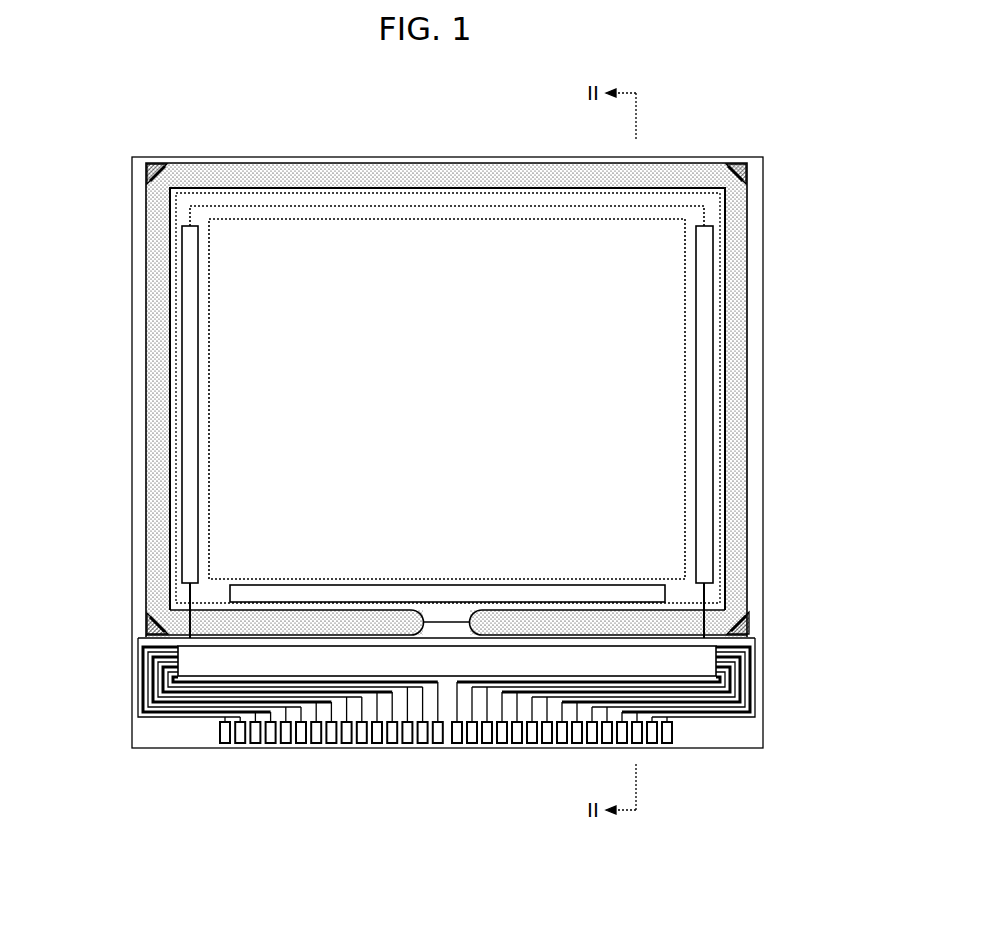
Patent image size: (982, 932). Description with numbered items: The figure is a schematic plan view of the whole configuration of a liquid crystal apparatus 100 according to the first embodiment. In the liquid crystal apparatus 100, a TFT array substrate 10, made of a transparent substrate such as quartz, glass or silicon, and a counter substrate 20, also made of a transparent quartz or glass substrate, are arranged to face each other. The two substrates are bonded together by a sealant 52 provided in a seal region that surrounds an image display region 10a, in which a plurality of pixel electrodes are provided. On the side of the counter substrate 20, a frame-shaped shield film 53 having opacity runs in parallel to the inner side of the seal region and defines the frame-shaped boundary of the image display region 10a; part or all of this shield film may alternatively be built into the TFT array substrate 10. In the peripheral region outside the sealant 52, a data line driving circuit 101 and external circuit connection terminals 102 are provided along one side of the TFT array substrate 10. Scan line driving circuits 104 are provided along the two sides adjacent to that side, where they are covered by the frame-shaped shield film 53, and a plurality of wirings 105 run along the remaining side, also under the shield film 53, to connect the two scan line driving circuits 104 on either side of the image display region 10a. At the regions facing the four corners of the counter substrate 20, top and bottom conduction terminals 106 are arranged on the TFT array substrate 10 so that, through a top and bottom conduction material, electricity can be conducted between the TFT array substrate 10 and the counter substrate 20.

The liquid crystal apparatus 100 is at (725, 100).
The TFT array substrate 10 is at (735, 748).
The image display region 10a is at (268, 357).
The counter substrate 20 is at (355, 163).
The sealant 52 is at (738, 375).
The frame-shaped shield film 53 is at (690, 592).
The data line driving circuit 101 is at (206, 666).
The external circuit connection terminals 102 is at (407, 737).
The scan line driving circuits 104 is at (707, 332).
The wirings 105 is at (420, 206).
The top and bottom conduction terminals 106 is at (145, 175).